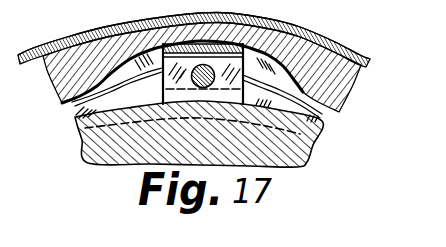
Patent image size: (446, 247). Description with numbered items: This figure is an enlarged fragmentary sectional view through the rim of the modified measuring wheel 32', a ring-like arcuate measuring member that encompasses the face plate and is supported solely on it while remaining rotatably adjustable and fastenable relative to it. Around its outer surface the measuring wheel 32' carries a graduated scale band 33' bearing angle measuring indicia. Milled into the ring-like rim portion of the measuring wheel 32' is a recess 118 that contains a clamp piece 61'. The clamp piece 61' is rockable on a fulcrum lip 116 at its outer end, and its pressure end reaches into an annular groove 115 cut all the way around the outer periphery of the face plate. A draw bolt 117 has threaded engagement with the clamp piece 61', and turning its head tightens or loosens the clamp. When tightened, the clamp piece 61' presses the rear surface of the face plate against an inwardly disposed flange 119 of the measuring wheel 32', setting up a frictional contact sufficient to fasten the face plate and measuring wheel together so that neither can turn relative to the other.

The annular groove 115 is at (327, 122).
The fulcrum lip 116 is at (268, 18).
The draw bolt 117 is at (162, 63).
The recess 118 is at (128, 64).
The inwardly disposed flange 119 is at (298, 136).
The measuring wheel 32' is at (227, 67).
The graduated scale band 33' is at (217, 39).
The clamp piece 61' is at (222, 68).